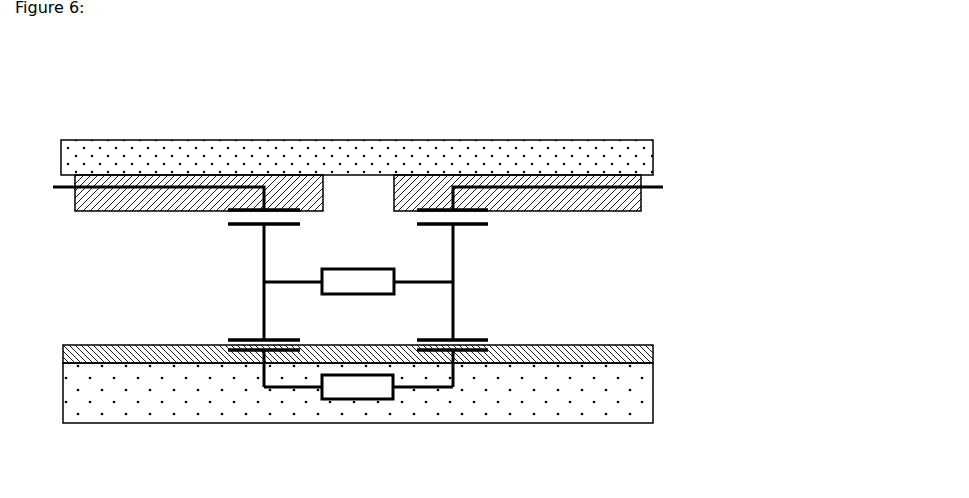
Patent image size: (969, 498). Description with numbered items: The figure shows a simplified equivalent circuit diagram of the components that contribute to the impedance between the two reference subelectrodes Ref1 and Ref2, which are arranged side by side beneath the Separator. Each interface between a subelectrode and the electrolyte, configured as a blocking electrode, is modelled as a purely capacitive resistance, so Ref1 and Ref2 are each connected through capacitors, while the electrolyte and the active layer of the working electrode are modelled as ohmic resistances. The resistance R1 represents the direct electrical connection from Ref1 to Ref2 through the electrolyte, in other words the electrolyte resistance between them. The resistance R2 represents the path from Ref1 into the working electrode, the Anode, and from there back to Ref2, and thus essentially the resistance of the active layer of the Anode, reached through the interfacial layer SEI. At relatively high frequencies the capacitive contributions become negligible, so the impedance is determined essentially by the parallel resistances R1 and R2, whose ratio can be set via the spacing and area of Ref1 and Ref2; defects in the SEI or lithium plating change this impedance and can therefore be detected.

The separator Separator is at (438, 151).
The first subelectrode Ref1 is at (188, 281).
The second subelectrode Ref2 is at (528, 281).
The electrolyte resistance R1 is at (358, 258).
The interfacial layer between anode and electrolyte SEI is at (387, 349).
The anode Anode is at (415, 393).
The active layer resistance of the working electrode R2 is at (358, 408).